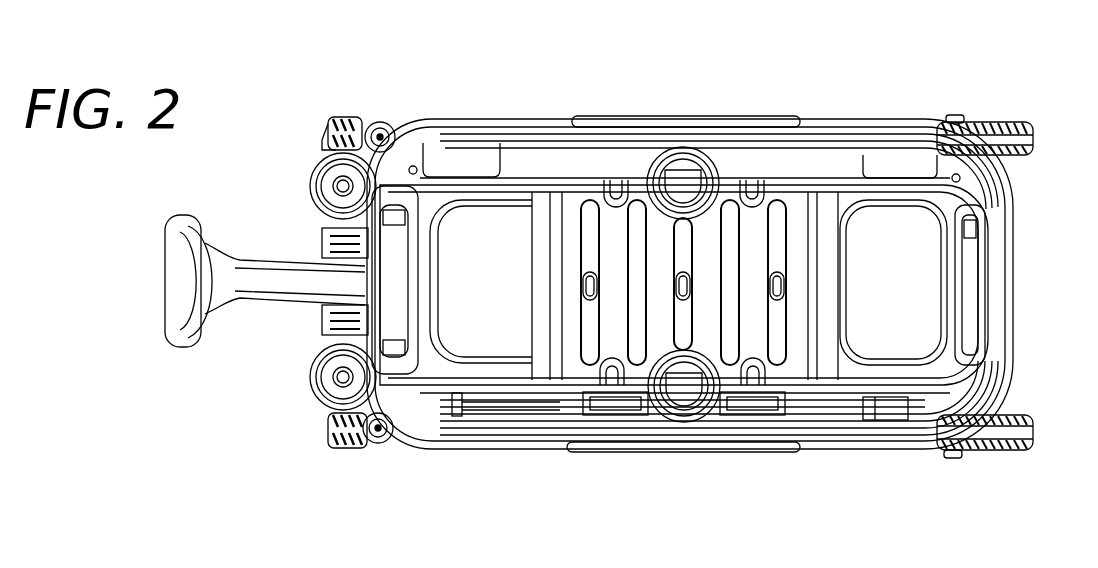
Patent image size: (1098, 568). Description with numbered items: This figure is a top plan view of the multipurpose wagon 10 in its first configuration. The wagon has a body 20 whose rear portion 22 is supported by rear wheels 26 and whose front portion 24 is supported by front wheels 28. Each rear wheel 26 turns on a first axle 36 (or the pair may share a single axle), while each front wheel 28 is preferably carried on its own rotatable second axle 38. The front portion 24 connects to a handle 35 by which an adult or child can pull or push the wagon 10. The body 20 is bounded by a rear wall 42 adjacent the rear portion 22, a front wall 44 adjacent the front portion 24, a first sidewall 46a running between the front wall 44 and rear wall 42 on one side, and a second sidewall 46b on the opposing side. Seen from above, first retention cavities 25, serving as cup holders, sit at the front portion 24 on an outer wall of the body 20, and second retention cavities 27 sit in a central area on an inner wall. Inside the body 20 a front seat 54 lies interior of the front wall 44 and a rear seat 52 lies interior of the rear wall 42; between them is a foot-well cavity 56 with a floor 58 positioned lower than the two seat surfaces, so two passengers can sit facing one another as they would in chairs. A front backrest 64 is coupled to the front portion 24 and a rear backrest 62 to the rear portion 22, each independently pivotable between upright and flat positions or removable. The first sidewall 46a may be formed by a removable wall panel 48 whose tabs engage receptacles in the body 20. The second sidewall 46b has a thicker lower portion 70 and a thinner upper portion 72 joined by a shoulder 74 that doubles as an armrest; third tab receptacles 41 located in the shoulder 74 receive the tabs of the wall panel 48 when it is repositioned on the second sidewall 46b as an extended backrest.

The multipurpose wagon 10 is at (800, 82).
The body 20 is at (766, 449).
The rear portion 22 is at (1015, 312).
The front portion 24 is at (322, 322).
The first retention cavities 25 is at (336, 176).
The rear wheels 26 is at (1000, 122).
The second retention cavities 27 is at (686, 147).
The front wheels 28 is at (360, 117).
The handle 35 is at (198, 216).
The first axles 36 is at (954, 116).
The second axles 38 is at (404, 116).
The third tab receptacles 41 is at (808, 415).
The rear wall 42 is at (1012, 180).
The front wall 44 is at (338, 126).
The first sidewall 46a is at (778, 120).
The second sidewall 46b is at (610, 452).
The wall panel 48 is at (610, 117).
The rear seat 52 is at (900, 275).
The front seat 54 is at (498, 330).
The cavity 56 is at (608, 224).
The floor 58 is at (766, 225).
The rear backrest 62 is at (968, 320).
The front backrest 64 is at (398, 322).
The lower portion 70 is at (835, 395).
The upper portion 72 is at (567, 436).
The shoulder 74 is at (448, 405).